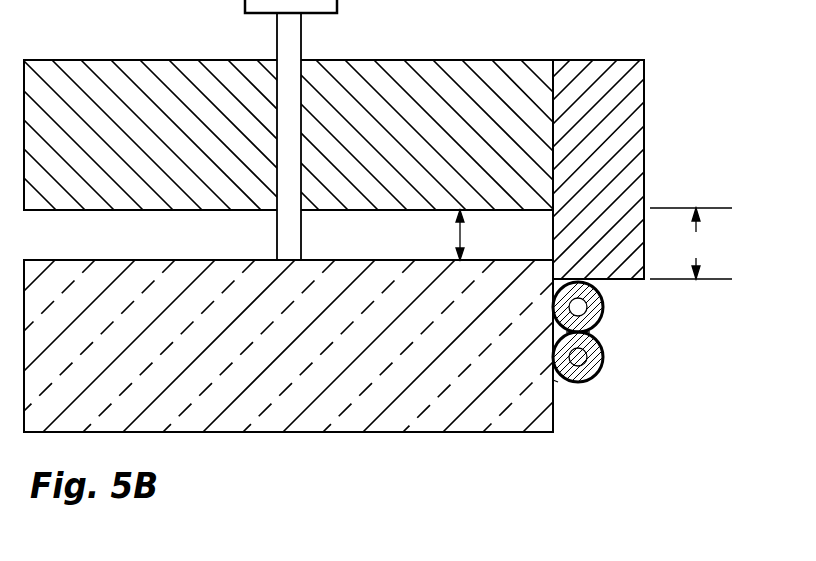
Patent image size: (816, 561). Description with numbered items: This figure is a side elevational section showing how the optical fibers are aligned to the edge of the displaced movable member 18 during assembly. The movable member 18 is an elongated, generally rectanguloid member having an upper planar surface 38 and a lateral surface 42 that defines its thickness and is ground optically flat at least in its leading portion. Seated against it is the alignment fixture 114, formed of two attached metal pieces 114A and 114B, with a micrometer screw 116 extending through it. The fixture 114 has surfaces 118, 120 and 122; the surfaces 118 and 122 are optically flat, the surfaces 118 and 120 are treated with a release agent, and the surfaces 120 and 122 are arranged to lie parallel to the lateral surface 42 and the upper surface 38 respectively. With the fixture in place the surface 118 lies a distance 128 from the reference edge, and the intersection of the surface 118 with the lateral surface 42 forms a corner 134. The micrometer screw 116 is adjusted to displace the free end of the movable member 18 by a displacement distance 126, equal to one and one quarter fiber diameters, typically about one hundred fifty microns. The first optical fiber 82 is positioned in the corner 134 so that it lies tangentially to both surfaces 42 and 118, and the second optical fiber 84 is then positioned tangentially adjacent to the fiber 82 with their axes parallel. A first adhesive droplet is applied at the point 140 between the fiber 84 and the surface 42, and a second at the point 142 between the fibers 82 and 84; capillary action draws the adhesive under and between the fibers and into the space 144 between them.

The movable member 18 is at (492, 433).
The upper planar surface 38 is at (358, 259).
The lateral surface 42 is at (553, 418).
The first optical fiber 82 is at (600, 316).
The second optical fiber 84 is at (602, 357).
The alignment fixture 114 is at (540, 60).
The first metal piece 114A is at (445, 68).
The second metal piece 114B is at (637, 118).
The micrometer screw 116 is at (301, 38).
The fixture surface 118 is at (637, 280).
The fixture surface 120 is at (553, 230).
The fixture surface 122 is at (412, 210).
The displacement distance 126 is at (458, 235).
The distance 128 is at (691, 243).
The corner 134 is at (601, 300).
The adhesive point 140 is at (558, 382).
The adhesive point 142 is at (593, 332).
The space 144 is at (595, 375).